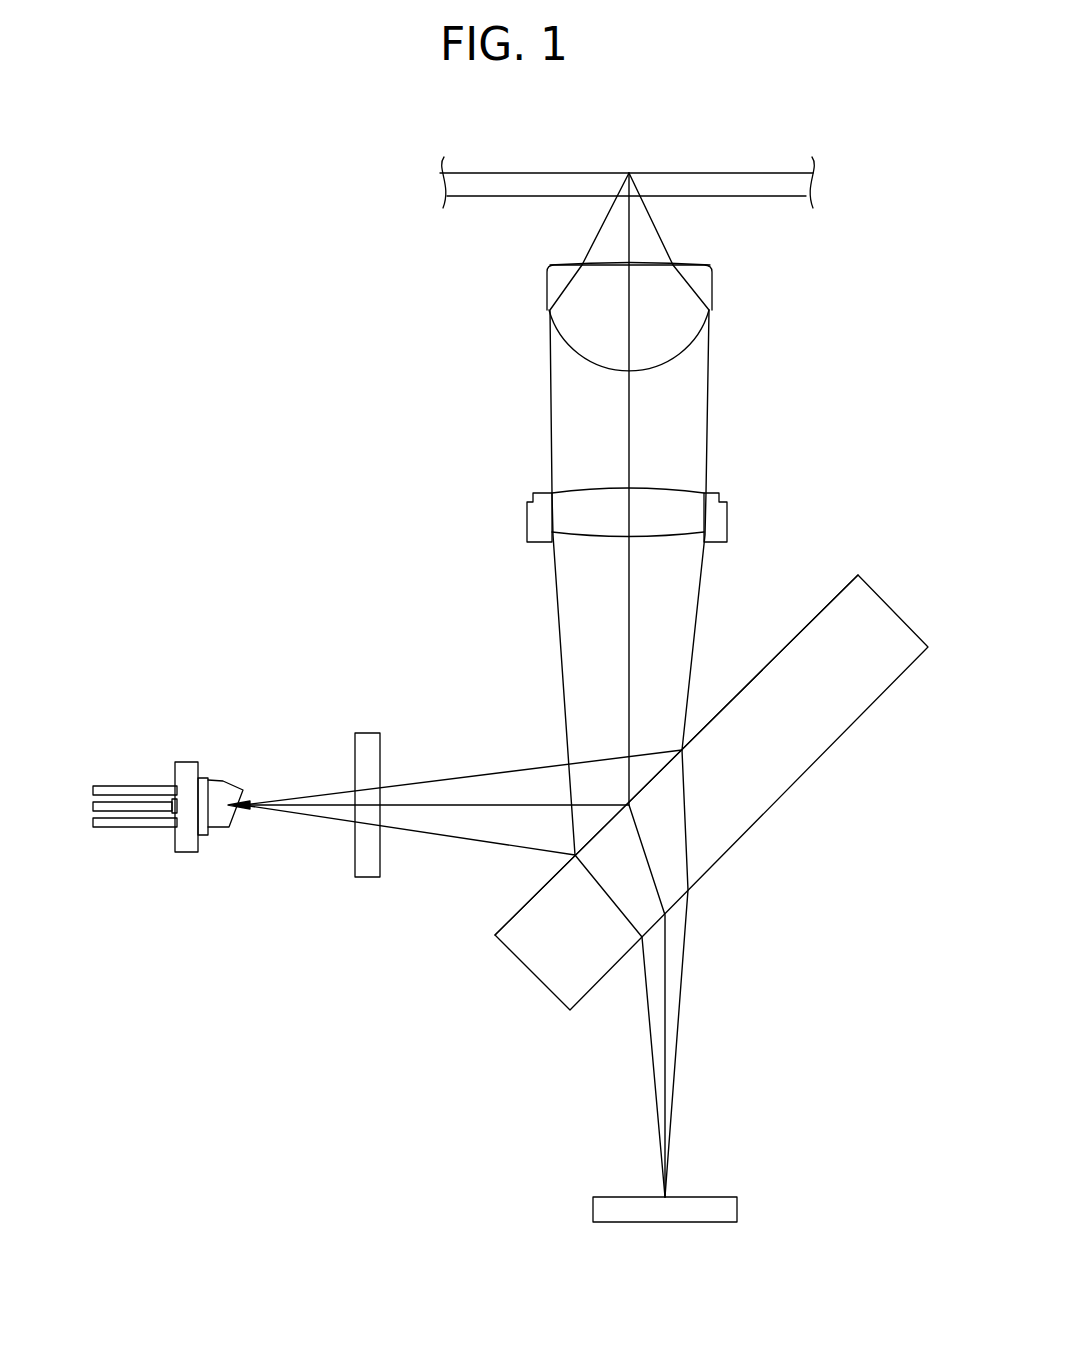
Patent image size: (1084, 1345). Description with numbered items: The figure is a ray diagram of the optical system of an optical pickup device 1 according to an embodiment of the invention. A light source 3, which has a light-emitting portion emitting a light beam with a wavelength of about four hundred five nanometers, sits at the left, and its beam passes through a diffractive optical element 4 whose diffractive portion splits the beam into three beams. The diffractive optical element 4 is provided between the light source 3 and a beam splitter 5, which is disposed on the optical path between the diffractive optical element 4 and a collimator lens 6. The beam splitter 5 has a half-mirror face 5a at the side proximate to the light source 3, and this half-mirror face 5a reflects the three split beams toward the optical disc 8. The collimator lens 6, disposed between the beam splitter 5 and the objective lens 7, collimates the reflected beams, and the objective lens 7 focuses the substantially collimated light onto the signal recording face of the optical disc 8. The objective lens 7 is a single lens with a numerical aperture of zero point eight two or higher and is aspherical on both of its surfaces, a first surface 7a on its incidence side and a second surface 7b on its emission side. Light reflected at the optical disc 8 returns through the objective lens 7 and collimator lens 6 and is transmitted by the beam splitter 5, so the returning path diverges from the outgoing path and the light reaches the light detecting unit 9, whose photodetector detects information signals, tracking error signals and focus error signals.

The optical pickup device 1 is at (260, 392).
The light source 3 is at (187, 770).
The diffractive optical element 4 is at (368, 741).
The beam splitter 5 is at (711, 783).
The half-mirror face 5a is at (780, 649).
The collimator lens 6 is at (722, 517).
The objective lens 7 is at (653, 314).
The first surface 7a is at (683, 347).
The second surface 7b is at (676, 266).
The optical disc 8 is at (724, 181).
The light detecting unit 9 is at (737, 1208).